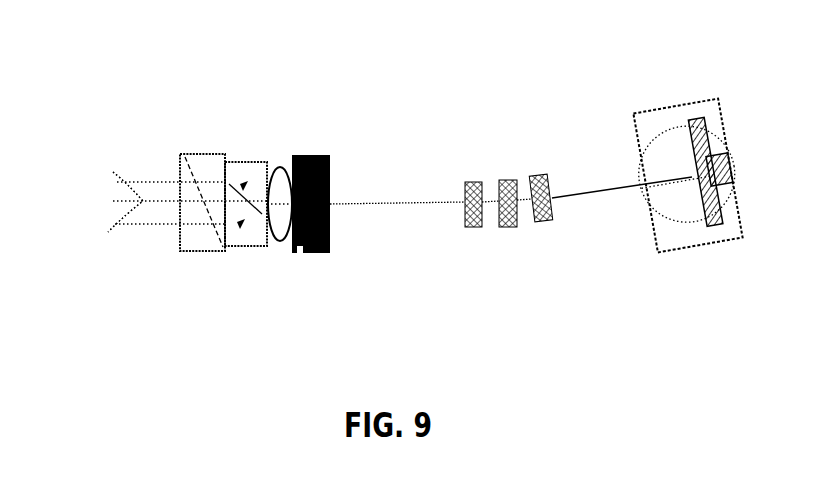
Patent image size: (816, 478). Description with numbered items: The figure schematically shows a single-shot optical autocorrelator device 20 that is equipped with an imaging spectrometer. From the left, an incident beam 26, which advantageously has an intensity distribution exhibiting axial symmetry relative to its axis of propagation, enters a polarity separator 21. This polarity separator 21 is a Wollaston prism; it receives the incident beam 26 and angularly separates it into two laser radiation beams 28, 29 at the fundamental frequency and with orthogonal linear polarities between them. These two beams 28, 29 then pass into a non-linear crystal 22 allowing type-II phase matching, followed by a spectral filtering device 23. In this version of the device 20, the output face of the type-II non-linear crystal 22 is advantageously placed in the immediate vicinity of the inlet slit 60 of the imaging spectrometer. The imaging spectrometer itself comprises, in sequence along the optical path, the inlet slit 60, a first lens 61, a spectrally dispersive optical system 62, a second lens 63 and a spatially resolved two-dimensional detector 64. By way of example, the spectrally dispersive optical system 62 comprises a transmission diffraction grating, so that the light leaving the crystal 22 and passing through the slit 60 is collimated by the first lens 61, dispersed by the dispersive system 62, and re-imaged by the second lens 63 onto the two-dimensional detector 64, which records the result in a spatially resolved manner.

The single-shot optical autocorrelator device 20 is at (146, 78).
The polarity separator 21 is at (205, 153).
The non-linear crystal 22 is at (256, 152).
The spectral filtering device 23 is at (283, 167).
The incident beam 26 is at (144, 176).
The laser radiation beam 28 is at (249, 178).
The laser radiation beam 29 is at (247, 238).
The inlet slit 60 is at (302, 253).
The first lens 61 is at (473, 178).
The spectrally dispersive optical system 62 is at (503, 243).
The second lens 63 is at (539, 173).
The spatially resolved two-dimensional detector 64 is at (690, 253).